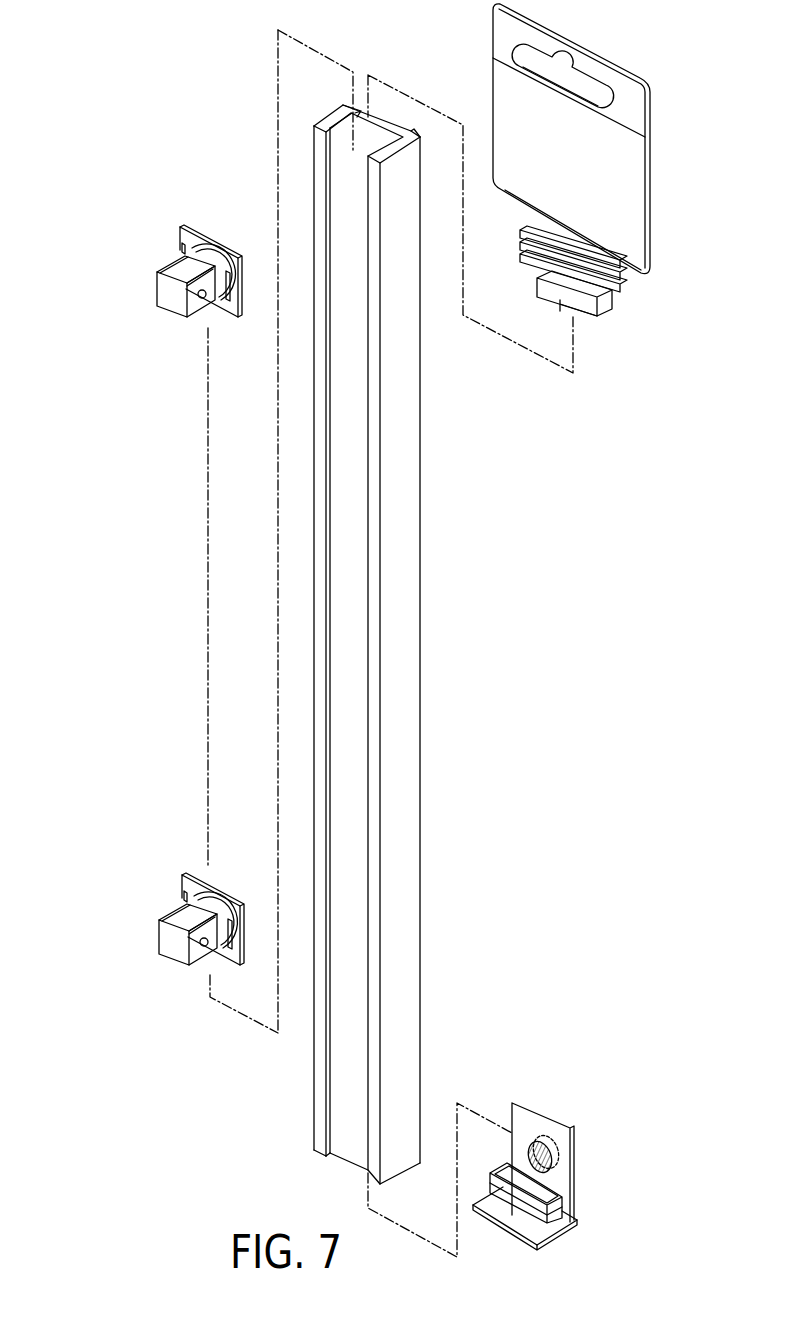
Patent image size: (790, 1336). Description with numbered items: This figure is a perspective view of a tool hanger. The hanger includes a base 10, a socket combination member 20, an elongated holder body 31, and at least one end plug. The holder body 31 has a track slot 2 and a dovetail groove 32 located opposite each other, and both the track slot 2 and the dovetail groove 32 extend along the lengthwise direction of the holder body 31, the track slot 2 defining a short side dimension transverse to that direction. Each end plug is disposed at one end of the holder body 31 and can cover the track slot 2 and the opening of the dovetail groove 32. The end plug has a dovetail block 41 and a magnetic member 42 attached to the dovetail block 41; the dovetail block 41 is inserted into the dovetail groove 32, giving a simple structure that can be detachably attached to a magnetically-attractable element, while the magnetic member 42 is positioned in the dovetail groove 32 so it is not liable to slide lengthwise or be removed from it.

The track slot 2 is at (350, 157).
The base 10 is at (185, 235).
The socket combination member 20 is at (160, 278).
The holder body 31 is at (400, 482).
The dovetail groove 32 is at (362, 117).
The dovetail block 41 is at (563, 1150).
The magnetic member 42 is at (553, 1168).